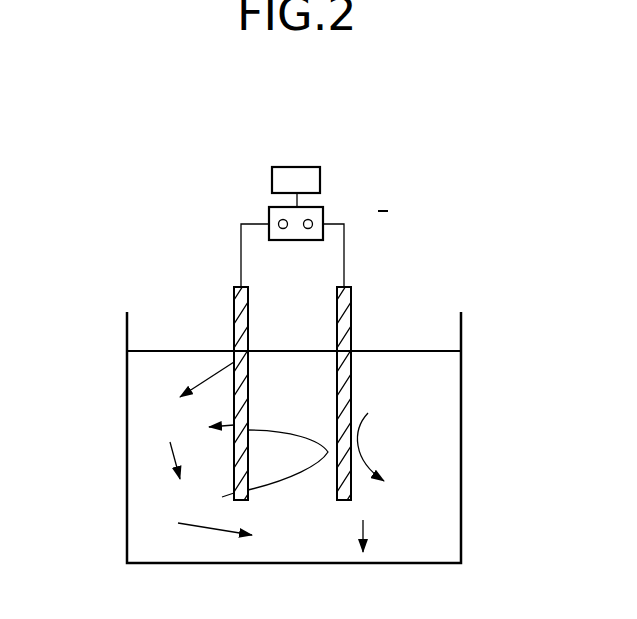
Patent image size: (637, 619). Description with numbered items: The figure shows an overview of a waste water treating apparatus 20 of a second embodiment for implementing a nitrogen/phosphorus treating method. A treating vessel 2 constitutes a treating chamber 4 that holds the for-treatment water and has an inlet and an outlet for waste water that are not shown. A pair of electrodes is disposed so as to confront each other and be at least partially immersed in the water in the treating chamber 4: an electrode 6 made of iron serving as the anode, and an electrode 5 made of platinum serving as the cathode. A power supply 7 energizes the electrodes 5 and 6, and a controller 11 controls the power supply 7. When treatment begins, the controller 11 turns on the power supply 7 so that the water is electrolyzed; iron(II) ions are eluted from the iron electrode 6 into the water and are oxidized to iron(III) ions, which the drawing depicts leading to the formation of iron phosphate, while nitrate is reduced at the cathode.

The waste water treating apparatus 20 is at (170, 162).
The controller 11 is at (299, 167).
The power supply 7 is at (325, 213).
The electrode 6 is at (234, 322).
The electrode 5 is at (351, 315).
The treating vessel 2 is at (127, 413).
The treating chamber 4 is at (313, 413).